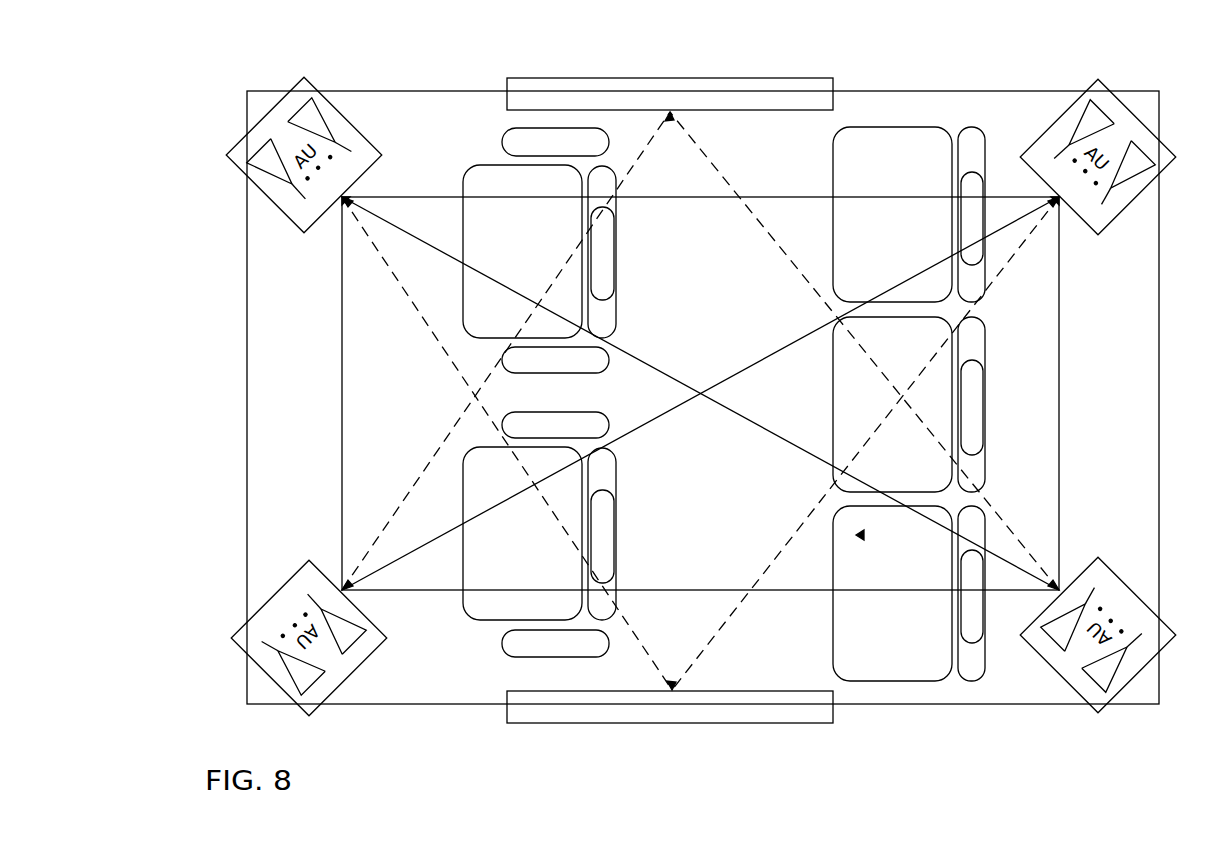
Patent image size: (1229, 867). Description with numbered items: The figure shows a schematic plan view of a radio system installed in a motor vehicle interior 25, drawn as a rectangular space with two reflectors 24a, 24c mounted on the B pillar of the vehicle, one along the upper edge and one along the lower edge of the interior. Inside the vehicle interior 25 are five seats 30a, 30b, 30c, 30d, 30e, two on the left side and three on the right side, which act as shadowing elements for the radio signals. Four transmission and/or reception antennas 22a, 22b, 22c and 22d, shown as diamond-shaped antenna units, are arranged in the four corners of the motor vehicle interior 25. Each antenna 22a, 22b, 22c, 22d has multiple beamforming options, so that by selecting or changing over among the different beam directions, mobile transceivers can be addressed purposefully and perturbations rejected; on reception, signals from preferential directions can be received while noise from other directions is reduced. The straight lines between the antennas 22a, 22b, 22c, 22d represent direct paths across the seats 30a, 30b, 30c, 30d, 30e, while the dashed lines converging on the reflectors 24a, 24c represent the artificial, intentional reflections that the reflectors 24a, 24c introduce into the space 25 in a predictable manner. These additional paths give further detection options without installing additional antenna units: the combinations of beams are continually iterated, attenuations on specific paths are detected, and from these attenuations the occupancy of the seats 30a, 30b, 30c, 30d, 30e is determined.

The transmission and/or reception antenna 22a is at (340, 118).
The transmission and/or reception antenna 22b is at (1113, 216).
The transmission and/or reception antenna 22c is at (303, 598).
The transmission and/or reception antenna 22d is at (1110, 576).
The reflector 24a is at (557, 83).
The reflector 24c is at (726, 723).
The motor vehicle interior 25 is at (1158, 556).
The seat 30a is at (613, 249).
The seat 30b is at (613, 531).
The seat 30c is at (983, 166).
The seat 30d is at (983, 400).
The seat 30e is at (983, 628).